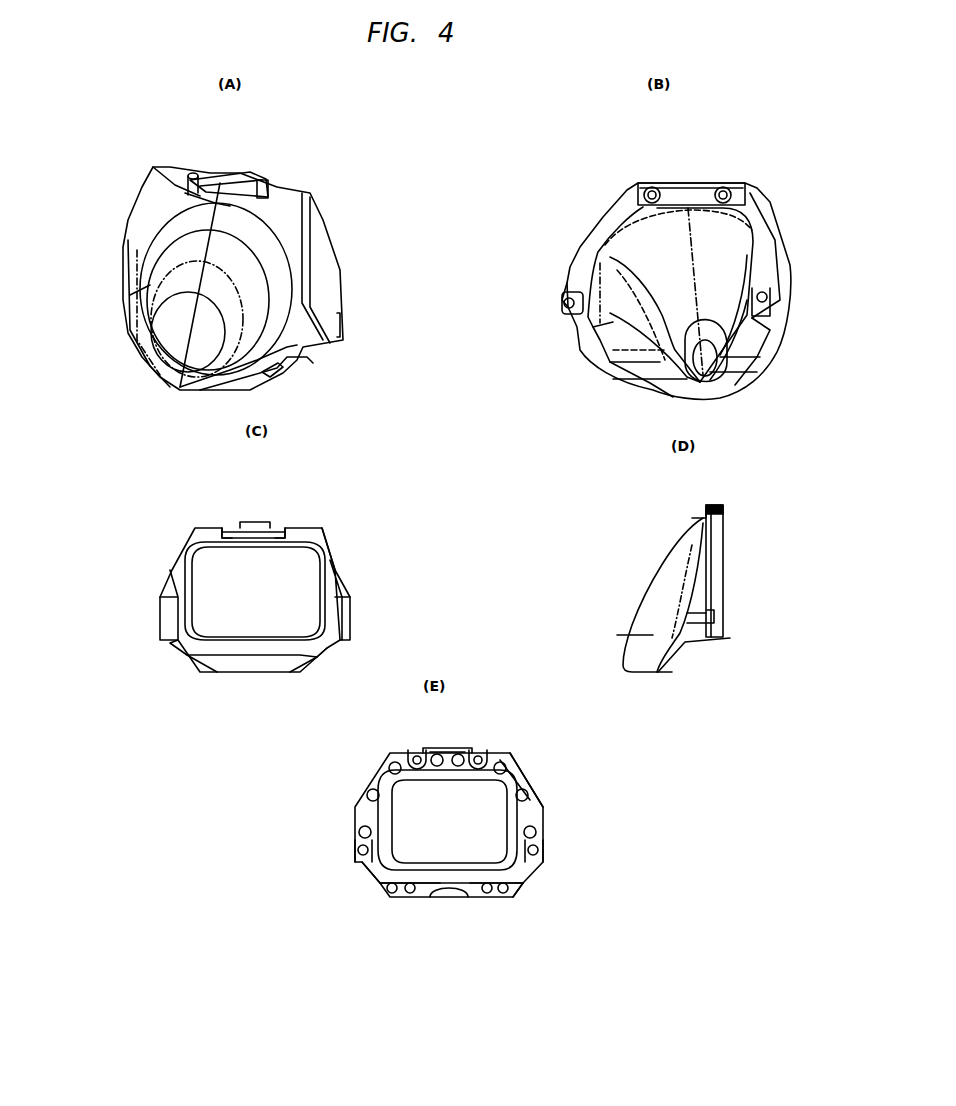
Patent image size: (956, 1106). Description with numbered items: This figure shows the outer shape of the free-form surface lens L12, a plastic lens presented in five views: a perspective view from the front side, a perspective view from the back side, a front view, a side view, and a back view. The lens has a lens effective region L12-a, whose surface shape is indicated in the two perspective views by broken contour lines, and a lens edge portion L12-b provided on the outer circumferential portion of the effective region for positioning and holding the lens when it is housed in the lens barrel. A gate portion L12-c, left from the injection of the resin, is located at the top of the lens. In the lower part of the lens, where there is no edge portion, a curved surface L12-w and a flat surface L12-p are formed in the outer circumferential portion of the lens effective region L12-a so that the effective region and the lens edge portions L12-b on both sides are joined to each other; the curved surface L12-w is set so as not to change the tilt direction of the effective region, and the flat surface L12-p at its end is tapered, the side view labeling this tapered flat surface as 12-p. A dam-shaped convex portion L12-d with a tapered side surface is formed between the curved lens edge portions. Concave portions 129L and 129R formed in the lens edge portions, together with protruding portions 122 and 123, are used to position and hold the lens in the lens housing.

The free-form surface lens L12 is at (464, 539).
The lens effective region L12-a is at (455, 526).
The lens edge portion L12-b is at (559, 569).
The gate portion L12-c is at (467, 434).
The dam-shaped convex portion L12-d is at (568, 637).
The flat surface L12-p is at (469, 406).
The curved surface L12-w is at (366, 540).
The concave portion 129L is at (471, 441).
The concave portion 129R is at (458, 453).
The protruding portion 122 is at (544, 595).
The protruding portion 123 is at (678, 575).
The flat surface 12-p is at (674, 504).